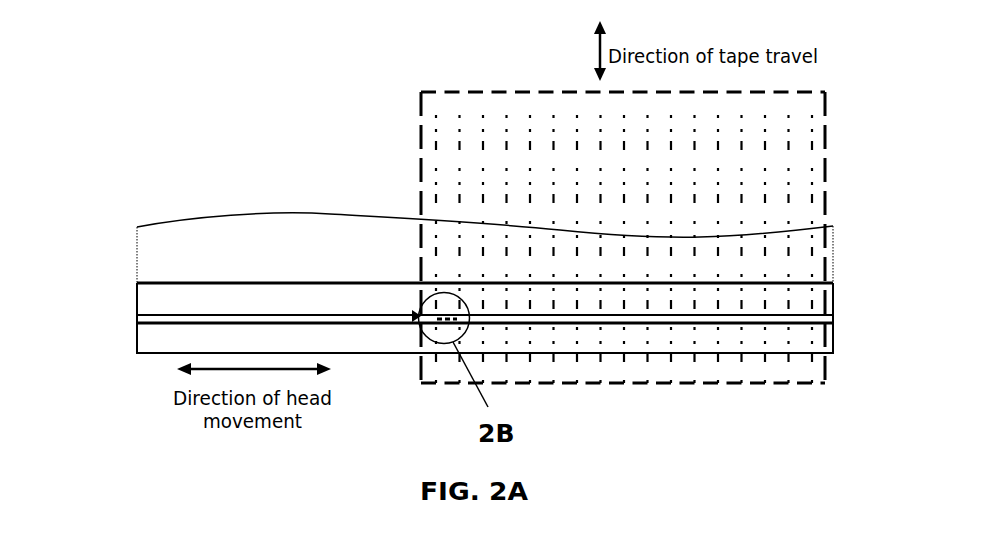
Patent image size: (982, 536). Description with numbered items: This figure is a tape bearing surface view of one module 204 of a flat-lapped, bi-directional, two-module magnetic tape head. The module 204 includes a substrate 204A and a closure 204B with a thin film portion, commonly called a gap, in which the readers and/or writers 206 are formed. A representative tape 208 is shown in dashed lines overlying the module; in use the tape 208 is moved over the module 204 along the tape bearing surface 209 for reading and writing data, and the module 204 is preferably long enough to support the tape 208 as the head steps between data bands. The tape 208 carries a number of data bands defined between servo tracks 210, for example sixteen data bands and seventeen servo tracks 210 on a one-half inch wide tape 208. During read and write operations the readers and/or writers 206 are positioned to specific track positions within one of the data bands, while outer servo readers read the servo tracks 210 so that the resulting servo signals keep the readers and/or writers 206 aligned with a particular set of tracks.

The module 204 is at (439, 244).
The substrate 204A is at (272, 214).
The closure 204B is at (136, 341).
The readers and/or writers 206 is at (414, 316).
The tape 208 is at (420, 95).
The tape bearing surface 209 is at (327, 303).
The servo tracks 210 is at (528, 172).